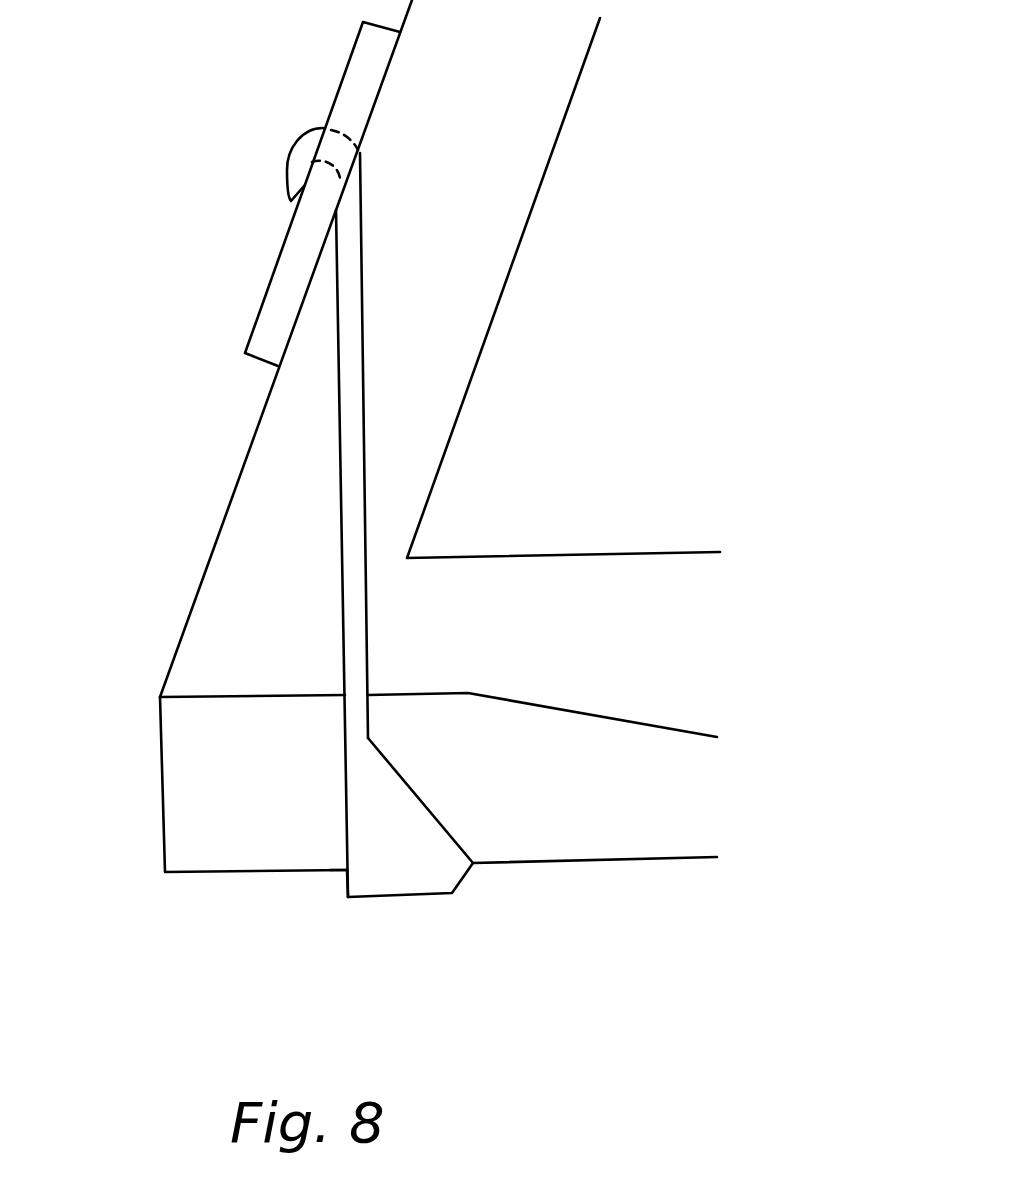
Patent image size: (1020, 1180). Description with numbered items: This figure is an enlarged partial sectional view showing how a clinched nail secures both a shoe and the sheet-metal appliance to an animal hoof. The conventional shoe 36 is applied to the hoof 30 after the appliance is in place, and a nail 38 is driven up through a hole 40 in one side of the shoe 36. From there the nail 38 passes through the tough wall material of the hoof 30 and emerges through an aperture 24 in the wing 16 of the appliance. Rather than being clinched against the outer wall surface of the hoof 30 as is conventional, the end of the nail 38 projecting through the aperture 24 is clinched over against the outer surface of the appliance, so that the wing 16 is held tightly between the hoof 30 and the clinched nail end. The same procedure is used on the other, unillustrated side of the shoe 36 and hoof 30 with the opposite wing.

The wing 16 is at (273, 299).
The aperture 24 is at (360, 156).
The hoof 30 is at (287, 437).
The shoe 36 is at (165, 815).
The nail 38 is at (383, 883).
The hole 40 is at (346, 869).